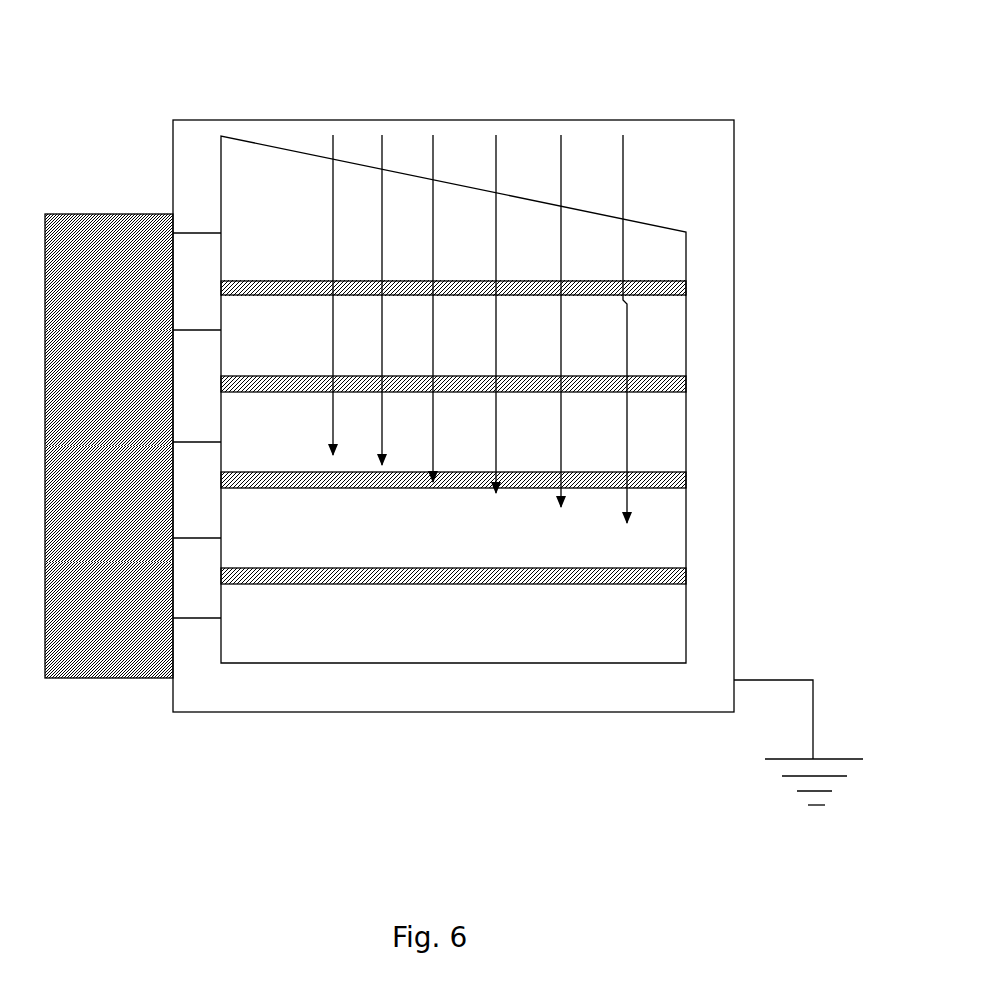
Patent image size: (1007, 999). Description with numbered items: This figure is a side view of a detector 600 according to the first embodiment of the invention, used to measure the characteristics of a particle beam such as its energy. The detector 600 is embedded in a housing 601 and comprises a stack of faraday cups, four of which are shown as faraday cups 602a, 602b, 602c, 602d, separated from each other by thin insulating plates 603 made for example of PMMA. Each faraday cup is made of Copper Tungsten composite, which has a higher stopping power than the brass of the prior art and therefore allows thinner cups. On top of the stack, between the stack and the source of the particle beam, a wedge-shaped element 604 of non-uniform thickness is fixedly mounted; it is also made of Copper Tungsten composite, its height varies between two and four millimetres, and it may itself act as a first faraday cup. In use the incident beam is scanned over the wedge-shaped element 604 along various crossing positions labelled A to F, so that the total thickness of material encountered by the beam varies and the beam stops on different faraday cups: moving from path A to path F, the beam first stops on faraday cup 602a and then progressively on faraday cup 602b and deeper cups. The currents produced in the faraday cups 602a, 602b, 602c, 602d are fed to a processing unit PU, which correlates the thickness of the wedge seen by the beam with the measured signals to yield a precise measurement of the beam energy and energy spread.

The detector 600 is at (252, 53).
The housing 601 is at (677, 120).
The faraday cup 602a is at (648, 350).
The faraday cup 602b is at (652, 437).
The faraday cup 602c is at (647, 533).
The faraday cup 602d is at (620, 634).
The insulating plates 603 is at (679, 573).
The wedge-shaped element 604 is at (221, 190).
The processing unit PU is at (128, 677).